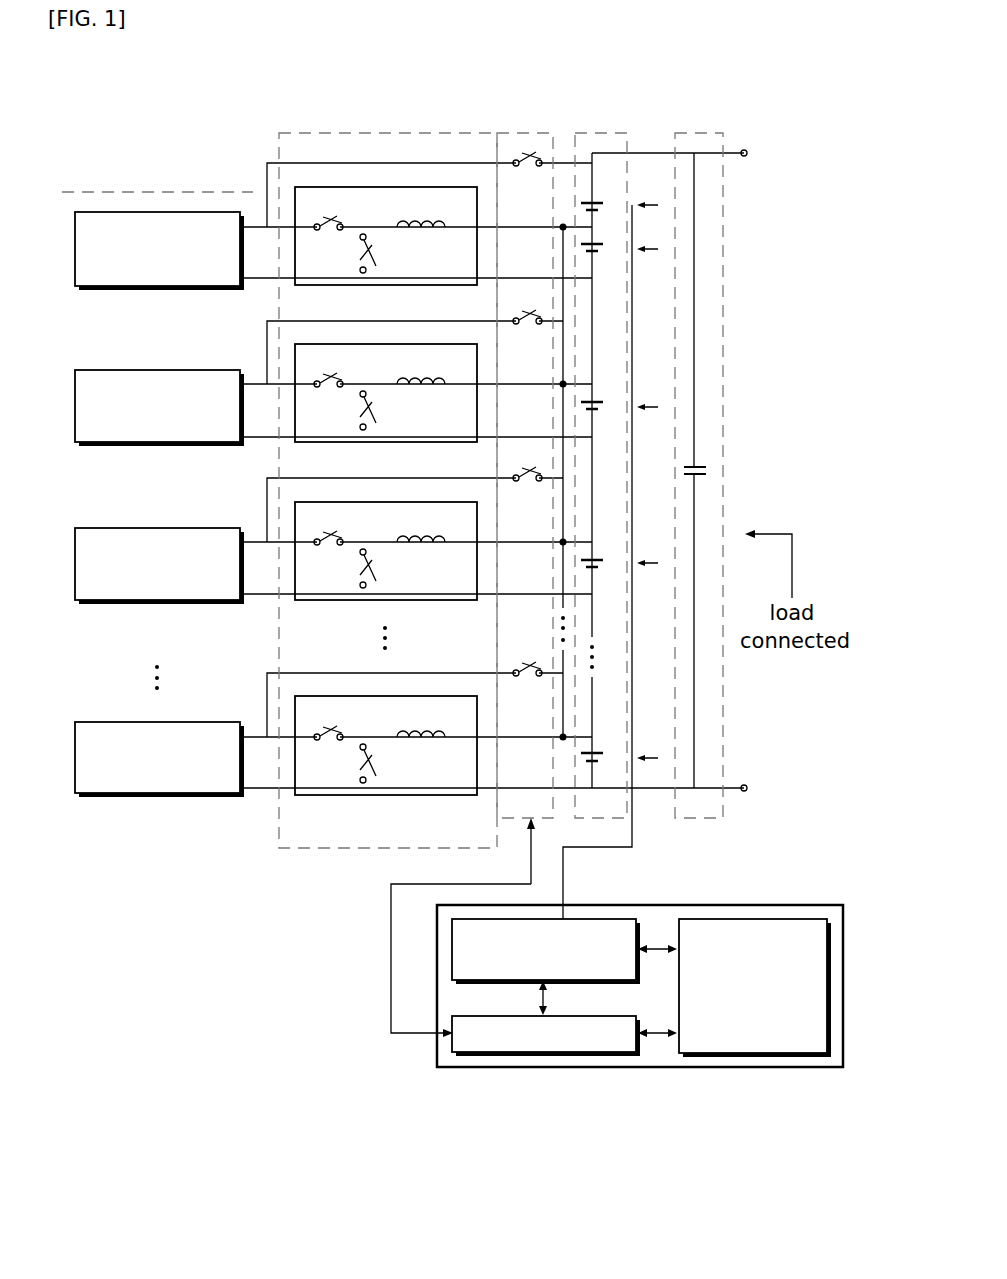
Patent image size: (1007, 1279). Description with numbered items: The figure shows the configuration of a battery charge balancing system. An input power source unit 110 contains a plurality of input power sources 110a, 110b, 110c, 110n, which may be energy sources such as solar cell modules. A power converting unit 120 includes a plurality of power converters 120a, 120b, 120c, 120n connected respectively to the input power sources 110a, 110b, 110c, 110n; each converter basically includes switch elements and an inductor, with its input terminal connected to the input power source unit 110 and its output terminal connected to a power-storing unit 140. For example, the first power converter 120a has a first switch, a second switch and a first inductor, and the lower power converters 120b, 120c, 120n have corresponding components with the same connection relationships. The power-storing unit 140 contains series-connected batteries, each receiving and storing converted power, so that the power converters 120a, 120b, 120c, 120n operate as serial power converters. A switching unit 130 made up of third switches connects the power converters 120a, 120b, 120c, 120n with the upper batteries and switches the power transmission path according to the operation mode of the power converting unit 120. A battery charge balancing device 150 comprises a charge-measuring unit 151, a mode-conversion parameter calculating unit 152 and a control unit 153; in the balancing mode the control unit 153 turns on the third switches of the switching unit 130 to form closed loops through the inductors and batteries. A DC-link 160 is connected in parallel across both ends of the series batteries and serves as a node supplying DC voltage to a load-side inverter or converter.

The input power source unit 110 is at (175, 190).
The first input power source 110a is at (177, 290).
The second input power source 110b is at (177, 446).
The third input power source 110c is at (177, 604).
The n-th input power source 110n is at (177, 797).
The power converting unit 120 is at (388, 133).
The first power converter 120a is at (387, 286).
The second power converter 120b is at (387, 443).
The third power converter 120c is at (387, 600).
The n-th power converter 120n is at (387, 795).
The switching unit 130 is at (530, 133).
The power-storing unit 140 is at (599, 133).
The battery charge balancing device 150 is at (722, 905).
The charge-measuring unit 151 is at (613, 919).
The mode-conversion parameter calculating unit 152 is at (752, 1053).
The control unit 153 is at (542, 1053).
The DC-link 160 is at (698, 133).